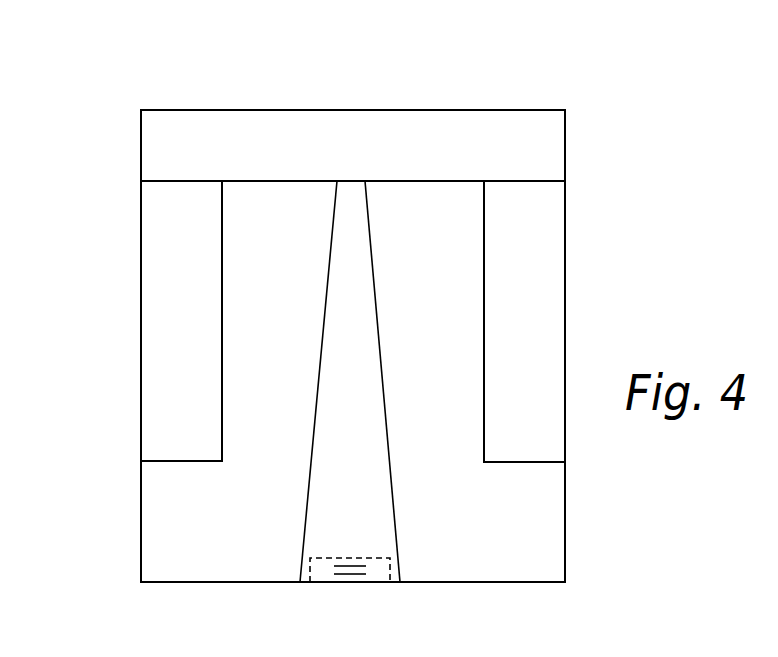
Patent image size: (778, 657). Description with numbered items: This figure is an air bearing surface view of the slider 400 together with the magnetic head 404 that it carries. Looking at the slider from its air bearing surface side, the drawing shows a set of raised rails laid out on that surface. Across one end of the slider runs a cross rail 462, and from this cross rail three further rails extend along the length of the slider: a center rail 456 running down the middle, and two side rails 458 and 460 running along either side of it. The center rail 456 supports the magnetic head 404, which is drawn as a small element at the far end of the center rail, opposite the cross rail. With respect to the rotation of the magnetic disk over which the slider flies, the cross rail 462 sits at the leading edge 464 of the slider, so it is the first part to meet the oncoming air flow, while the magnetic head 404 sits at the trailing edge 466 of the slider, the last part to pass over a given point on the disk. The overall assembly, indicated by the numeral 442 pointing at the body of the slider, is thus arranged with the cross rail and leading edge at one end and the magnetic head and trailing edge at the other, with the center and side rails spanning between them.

The slider 400 is at (626, 73).
The housing 442 is at (130, 535).
The cross rail 462 is at (230, 122).
The leading edge 464 is at (398, 110).
The side rail 458 is at (153, 327).
The side rail 460 is at (555, 328).
The center rail 456 is at (337, 313).
The magnetic head 404 is at (316, 586).
The trailing edge 466 is at (450, 583).